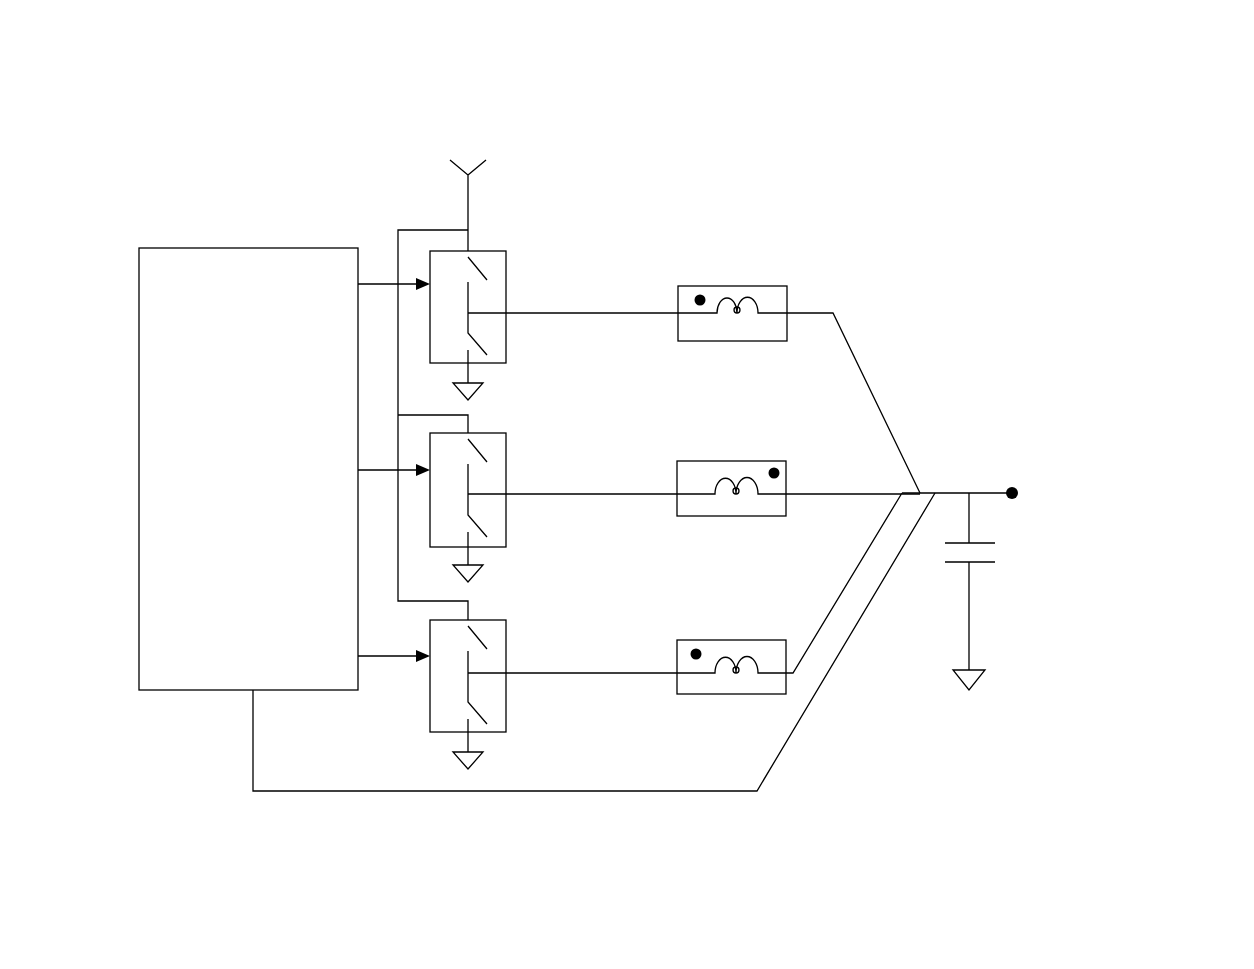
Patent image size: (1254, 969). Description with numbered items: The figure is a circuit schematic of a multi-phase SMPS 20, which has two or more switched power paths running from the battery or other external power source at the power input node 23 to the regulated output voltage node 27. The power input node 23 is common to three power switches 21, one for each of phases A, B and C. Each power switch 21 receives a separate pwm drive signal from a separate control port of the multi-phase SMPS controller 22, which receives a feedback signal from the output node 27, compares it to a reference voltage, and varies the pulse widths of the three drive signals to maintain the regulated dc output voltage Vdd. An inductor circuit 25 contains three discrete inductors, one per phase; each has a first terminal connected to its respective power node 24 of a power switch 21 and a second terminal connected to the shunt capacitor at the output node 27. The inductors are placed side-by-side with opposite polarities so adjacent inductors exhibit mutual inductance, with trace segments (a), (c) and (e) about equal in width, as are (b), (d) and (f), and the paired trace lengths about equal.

The multi-phase SMPS 20 is at (201, 749).
The power switches 21 is at (433, 251).
The multi-phase SMPS controller 22 is at (180, 248).
The power input node 23 is at (468, 222).
The power node 24 is at (512, 315).
The inductor circuit 25 is at (895, 273).
The regulated output voltage node 27 is at (925, 490).